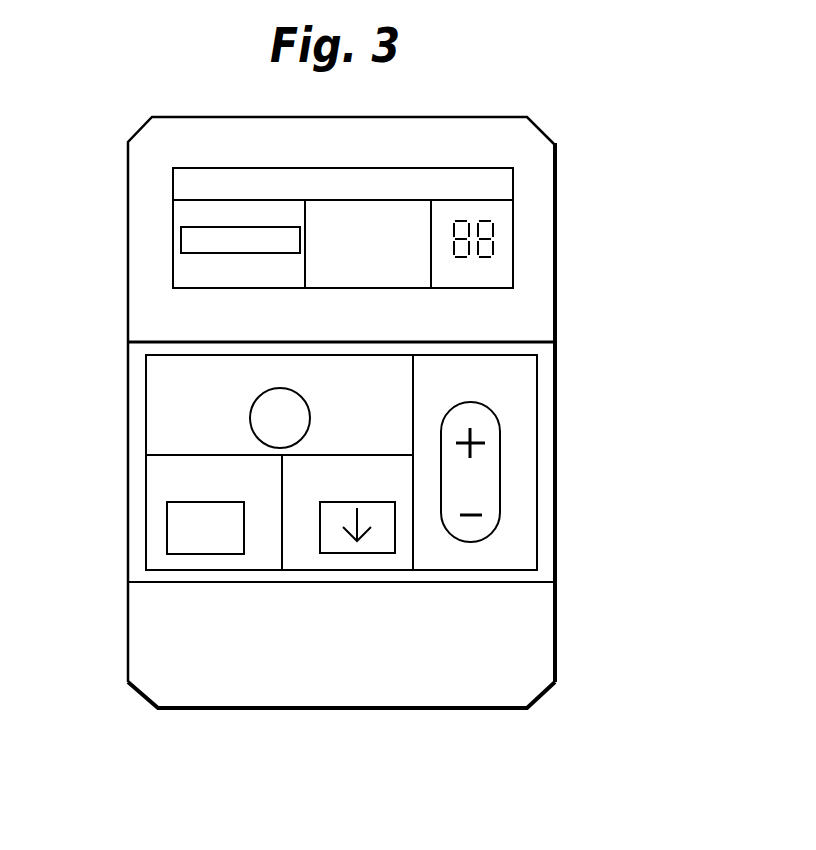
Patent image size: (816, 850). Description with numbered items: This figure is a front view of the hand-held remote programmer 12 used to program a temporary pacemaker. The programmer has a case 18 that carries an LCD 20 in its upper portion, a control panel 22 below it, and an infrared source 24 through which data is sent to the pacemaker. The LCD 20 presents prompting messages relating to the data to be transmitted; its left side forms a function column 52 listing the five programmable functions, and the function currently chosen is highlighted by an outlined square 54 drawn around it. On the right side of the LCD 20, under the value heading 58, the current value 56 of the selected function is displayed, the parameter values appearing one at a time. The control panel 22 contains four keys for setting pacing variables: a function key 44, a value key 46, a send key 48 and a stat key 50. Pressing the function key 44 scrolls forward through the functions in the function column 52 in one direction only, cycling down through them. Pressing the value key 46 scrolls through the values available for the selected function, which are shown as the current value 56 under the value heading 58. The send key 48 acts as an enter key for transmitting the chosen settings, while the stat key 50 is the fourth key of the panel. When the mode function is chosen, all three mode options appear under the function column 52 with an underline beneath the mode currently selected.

The remote programmer 12 is at (588, 162).
The case 18 is at (556, 232).
The LCD 20 is at (173, 271).
The control panel 22 is at (517, 433).
The infrared source 24 is at (310, 128).
The function key 44 is at (375, 545).
The value key 46 is at (485, 478).
The send key 48 is at (185, 522).
The stat key 50 is at (265, 410).
The function column 52 is at (252, 170).
The outlined square 54 is at (181, 241).
The current value 56 is at (500, 258).
The value heading 58 is at (428, 170).